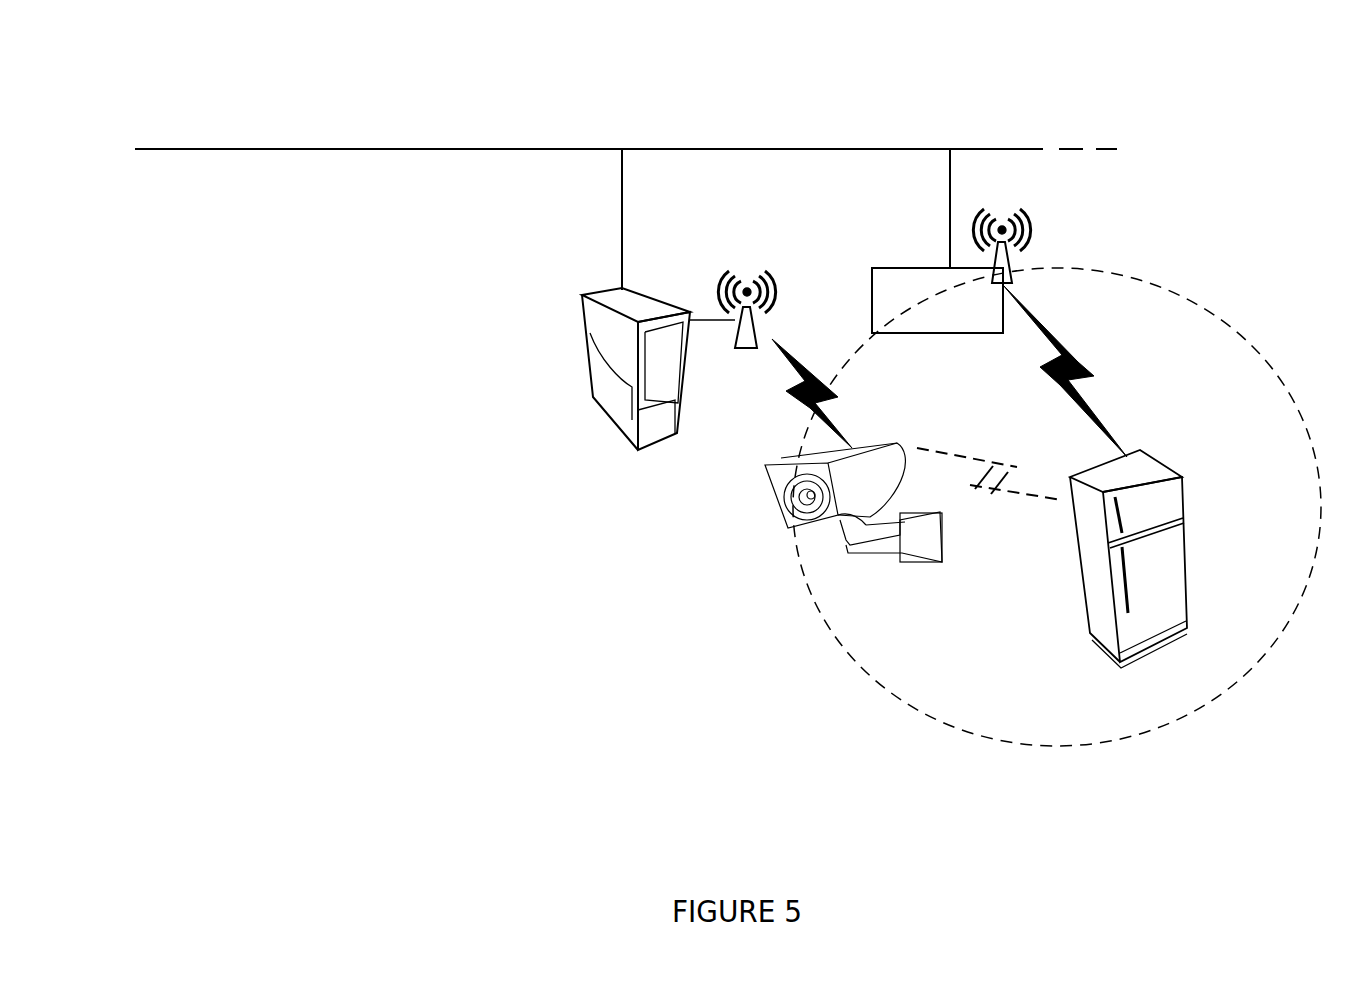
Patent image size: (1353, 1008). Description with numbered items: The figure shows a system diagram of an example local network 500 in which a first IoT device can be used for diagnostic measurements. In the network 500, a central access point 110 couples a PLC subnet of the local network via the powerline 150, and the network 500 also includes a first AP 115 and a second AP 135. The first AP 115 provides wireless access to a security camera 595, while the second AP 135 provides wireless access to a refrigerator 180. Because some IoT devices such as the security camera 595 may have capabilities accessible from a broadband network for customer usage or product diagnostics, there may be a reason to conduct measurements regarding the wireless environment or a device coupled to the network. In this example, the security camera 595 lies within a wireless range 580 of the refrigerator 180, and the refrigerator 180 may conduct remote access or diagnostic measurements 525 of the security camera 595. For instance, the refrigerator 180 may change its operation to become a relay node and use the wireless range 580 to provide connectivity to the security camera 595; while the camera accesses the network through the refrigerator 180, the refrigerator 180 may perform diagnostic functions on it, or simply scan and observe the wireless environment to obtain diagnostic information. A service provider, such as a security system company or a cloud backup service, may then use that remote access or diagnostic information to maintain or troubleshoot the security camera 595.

The network 500 is at (138, 22).
The powerline 150 is at (202, 148).
The central access point 110 is at (660, 297).
The first AP 115 is at (777, 286).
The second AP 135 is at (902, 270).
The refrigerator 180 is at (1150, 450).
The remote access or diagnostic measurements 525 is at (1000, 458).
The wireless range 580 is at (1232, 326).
The security camera 595 is at (873, 447).